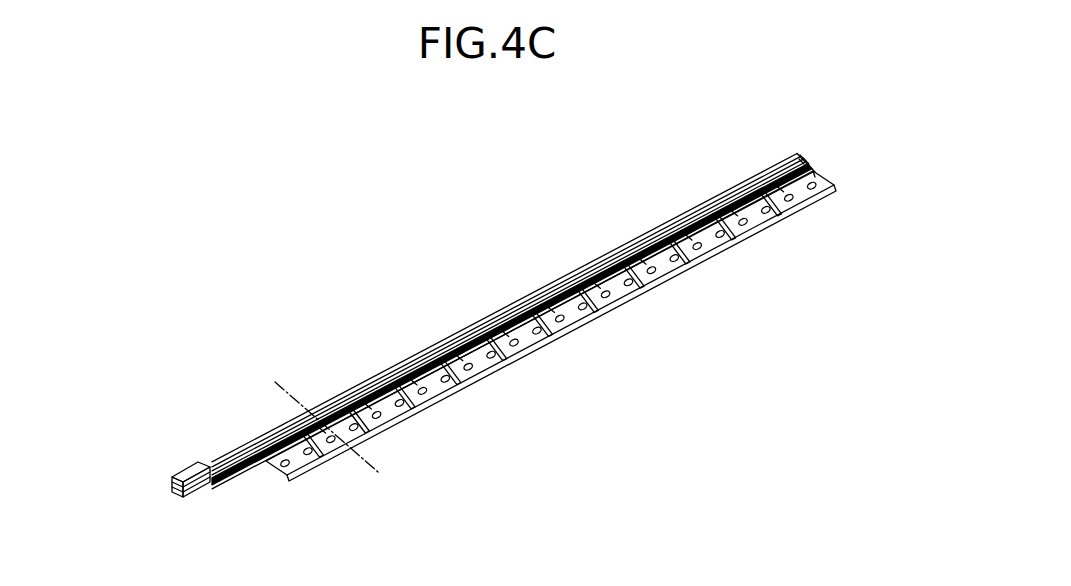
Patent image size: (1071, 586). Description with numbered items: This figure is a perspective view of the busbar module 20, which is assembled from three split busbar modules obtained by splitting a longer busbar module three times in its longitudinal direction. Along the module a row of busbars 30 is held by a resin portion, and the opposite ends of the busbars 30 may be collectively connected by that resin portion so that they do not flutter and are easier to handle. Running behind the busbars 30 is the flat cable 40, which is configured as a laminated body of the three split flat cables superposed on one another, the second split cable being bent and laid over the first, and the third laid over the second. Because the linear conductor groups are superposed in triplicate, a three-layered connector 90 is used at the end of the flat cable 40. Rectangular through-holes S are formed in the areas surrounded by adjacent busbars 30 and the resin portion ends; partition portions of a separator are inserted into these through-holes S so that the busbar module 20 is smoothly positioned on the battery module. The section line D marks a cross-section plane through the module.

The busbar module 20 is at (722, 177).
The busbar 30 is at (418, 425).
The flat cable 40 is at (395, 336).
The connector 90 is at (193, 470).
The rectangular through-hole S is at (790, 201).
The section line D- D is at (272, 391).